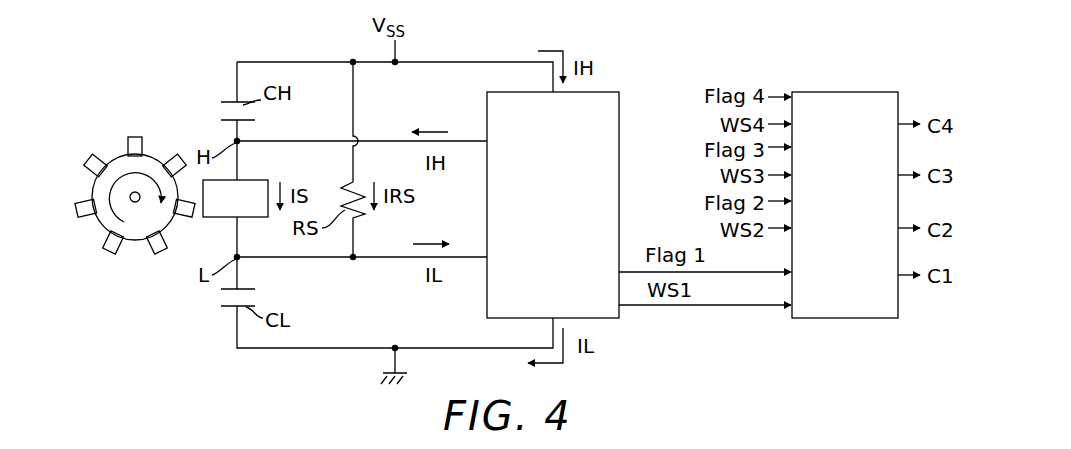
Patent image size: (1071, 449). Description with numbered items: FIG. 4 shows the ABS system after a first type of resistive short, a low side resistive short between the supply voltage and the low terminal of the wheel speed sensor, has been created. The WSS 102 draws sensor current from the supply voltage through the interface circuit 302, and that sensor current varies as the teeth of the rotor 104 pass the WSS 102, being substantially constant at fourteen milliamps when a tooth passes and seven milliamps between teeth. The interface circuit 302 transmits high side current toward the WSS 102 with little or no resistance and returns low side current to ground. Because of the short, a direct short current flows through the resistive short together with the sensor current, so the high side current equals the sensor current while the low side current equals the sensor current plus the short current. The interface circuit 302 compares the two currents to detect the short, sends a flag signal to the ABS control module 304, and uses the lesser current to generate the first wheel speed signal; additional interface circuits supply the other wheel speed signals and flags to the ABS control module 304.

The WSS 102 is at (252, 180).
The rotor 104 is at (147, 153).
The interface circuit 302 is at (604, 92).
The ABS control module 304 is at (820, 92).